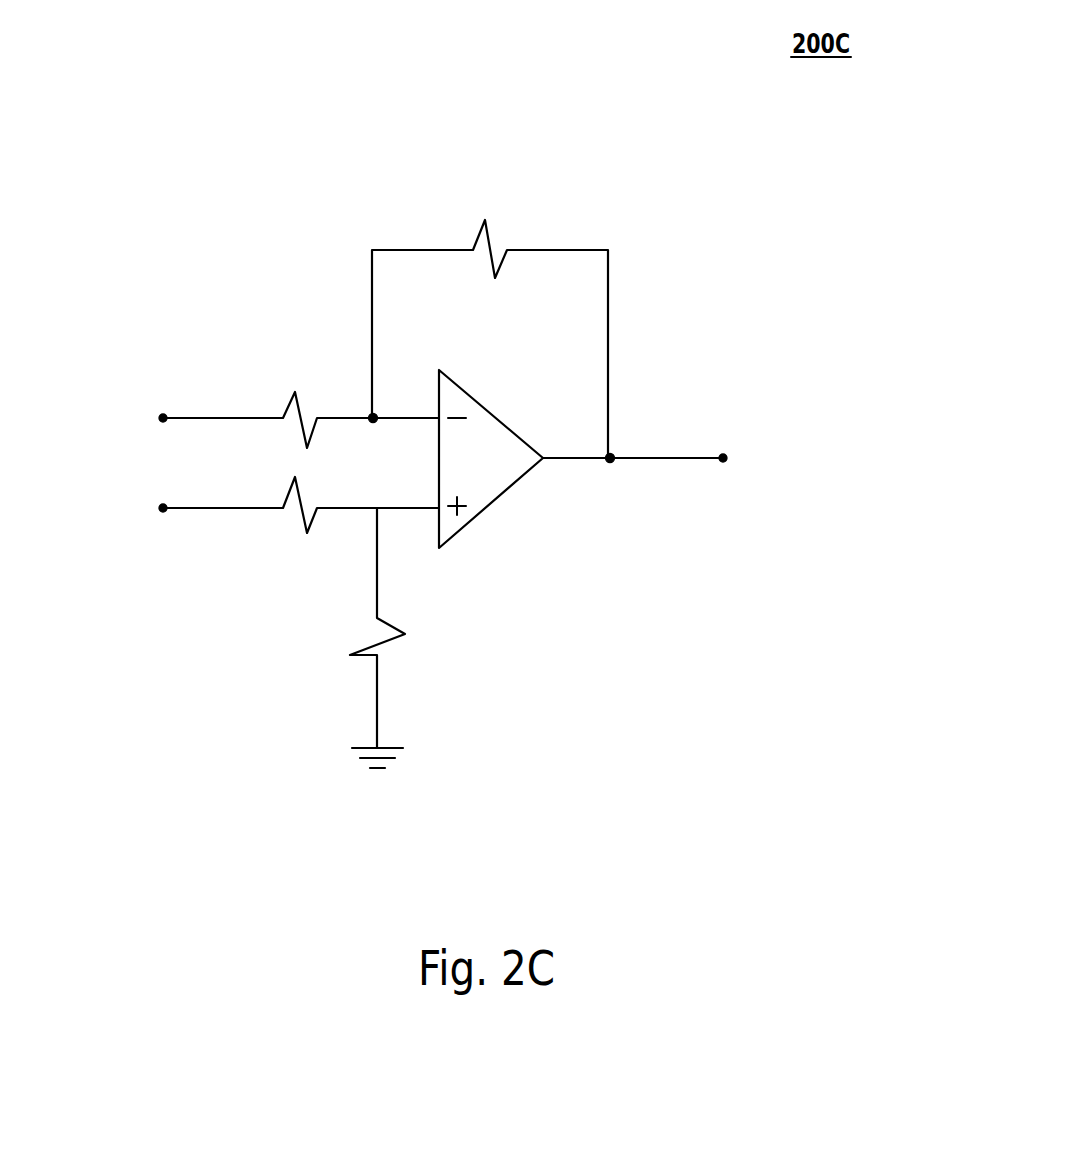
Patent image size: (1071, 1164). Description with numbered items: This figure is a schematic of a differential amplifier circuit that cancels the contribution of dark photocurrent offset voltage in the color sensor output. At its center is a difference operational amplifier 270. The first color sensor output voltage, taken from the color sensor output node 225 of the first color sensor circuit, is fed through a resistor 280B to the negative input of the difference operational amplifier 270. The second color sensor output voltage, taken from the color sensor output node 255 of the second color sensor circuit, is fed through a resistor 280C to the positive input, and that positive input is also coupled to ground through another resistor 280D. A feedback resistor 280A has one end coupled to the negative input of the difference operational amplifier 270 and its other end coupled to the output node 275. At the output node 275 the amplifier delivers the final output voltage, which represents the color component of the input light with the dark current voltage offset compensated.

The color sensor output node 225 is at (163, 413).
The color sensor output node 255 is at (158, 515).
The difference operational amplifier 270 is at (503, 508).
The output node 275 is at (620, 464).
The feedback resistor 280A is at (495, 225).
The resistor 280B is at (292, 392).
The resistor 280C is at (297, 530).
The resistor 280D is at (410, 638).